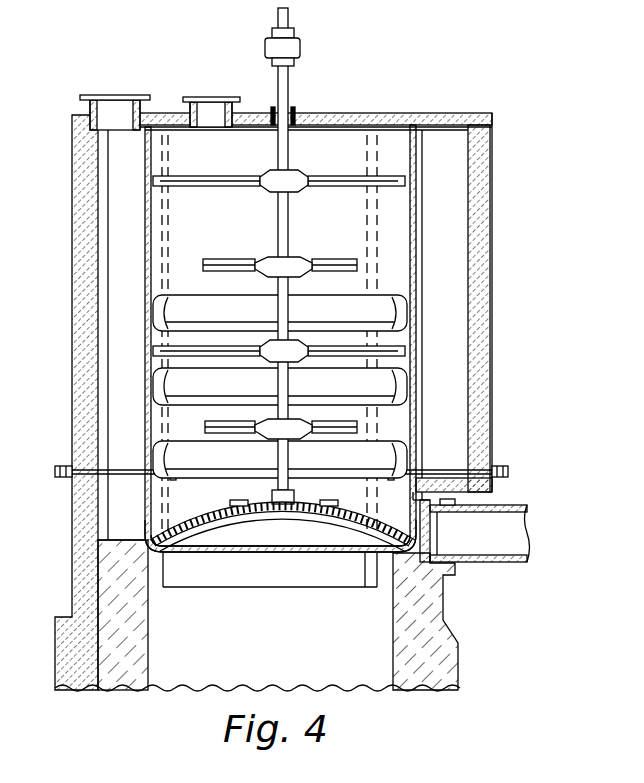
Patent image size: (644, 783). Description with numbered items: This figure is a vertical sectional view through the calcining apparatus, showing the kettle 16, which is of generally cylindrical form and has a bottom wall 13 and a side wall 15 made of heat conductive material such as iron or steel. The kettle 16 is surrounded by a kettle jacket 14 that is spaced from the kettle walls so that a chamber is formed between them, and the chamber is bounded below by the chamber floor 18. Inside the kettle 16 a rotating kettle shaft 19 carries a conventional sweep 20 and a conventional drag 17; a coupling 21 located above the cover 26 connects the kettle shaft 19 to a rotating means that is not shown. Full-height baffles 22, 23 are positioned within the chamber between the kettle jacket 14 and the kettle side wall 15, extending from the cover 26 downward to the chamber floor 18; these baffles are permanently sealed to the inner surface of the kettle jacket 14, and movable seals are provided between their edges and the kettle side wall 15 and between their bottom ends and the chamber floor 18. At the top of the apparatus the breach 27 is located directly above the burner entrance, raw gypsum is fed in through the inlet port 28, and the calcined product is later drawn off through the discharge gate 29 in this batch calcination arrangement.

The bottom wall 13 is at (385, 553).
The kettle jacket 14 is at (492, 305).
The side wall 15 is at (413, 250).
The kettle 16 is at (192, 209).
The drag 17 is at (188, 517).
The chamber floor 18 is at (126, 540).
The kettle shaft 19 is at (290, 148).
The sweep 20 is at (318, 262).
The coupling 21 is at (301, 52).
The baffle 22 is at (163, 575).
The baffle 23 is at (378, 575).
The cover 26 is at (262, 112).
The breach 27 is at (101, 95).
The inlet port 28 is at (200, 100).
The discharge gate 29 is at (453, 507).